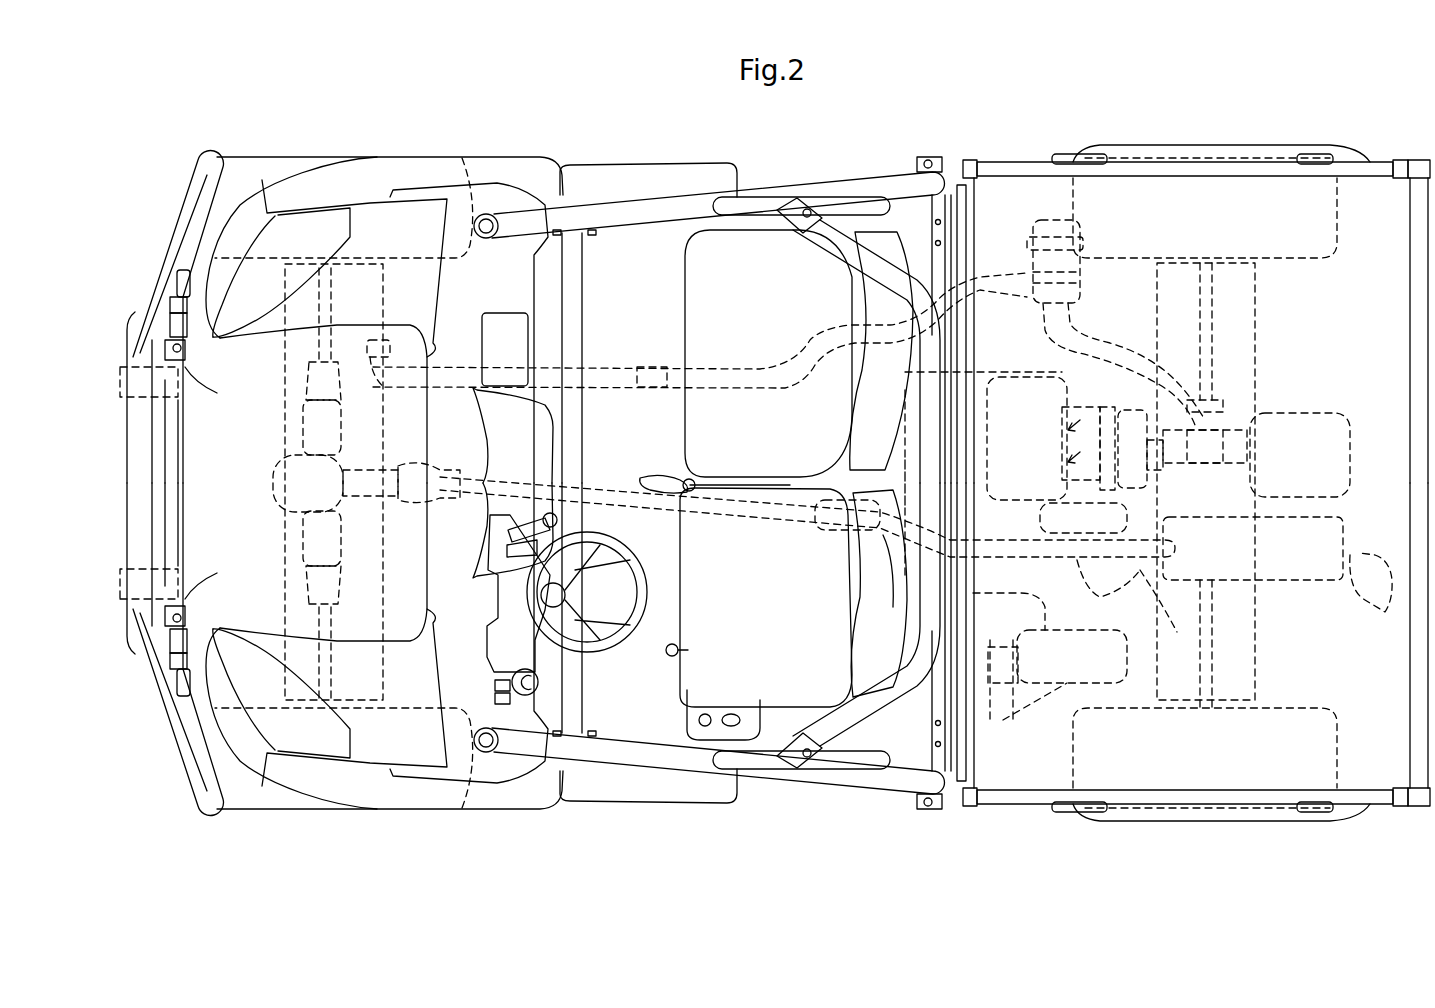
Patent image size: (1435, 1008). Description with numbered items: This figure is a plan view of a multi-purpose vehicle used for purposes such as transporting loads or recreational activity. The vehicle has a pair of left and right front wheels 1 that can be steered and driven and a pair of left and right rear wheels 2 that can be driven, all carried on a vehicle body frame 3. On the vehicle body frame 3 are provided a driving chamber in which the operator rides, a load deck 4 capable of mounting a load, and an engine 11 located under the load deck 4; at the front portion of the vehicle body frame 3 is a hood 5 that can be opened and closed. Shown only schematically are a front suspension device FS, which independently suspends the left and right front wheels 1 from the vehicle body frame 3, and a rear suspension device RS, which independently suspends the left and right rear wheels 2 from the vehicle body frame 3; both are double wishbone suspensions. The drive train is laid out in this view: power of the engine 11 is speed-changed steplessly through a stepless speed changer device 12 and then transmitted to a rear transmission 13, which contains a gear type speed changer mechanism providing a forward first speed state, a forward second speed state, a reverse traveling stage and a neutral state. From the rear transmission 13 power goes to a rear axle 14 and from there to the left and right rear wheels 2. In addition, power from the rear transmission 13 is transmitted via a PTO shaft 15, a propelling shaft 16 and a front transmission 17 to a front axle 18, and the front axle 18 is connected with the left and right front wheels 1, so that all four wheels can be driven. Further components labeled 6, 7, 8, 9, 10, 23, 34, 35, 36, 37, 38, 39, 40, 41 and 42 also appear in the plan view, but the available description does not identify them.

The front wheels 1 is at (262, 153).
The rear wheels 2 is at (1245, 150).
The vehicle body frame 3 is at (645, 245).
The load deck 4 is at (1370, 200).
The hood 5 is at (170, 353).
The passenger seat 6 is at (693, 663).
The driver seat 7 is at (687, 300).
The steering wheel 8 is at (642, 592).
The steering shaft 9 is at (573, 500).
The shift lever 10 is at (537, 660).
The engine 11 is at (1017, 373).
The stepless speed changer device 12 is at (1168, 618).
The rear transmission 13 is at (1338, 521).
The rear axle 14 is at (1266, 378).
The PTO shaft 15 is at (1343, 657).
The propelling shaft 16 is at (745, 505).
The front transmission 17 is at (273, 462).
The front axle 18 is at (303, 610).
The fuel tank 23 is at (1067, 557).
The intake duct 34 is at (1112, 432).
The muffler 35 is at (1017, 660).
The air cleaner 36 is at (1317, 455).
The air intake 37 is at (1376, 603).
The pipe 38 is at (767, 392).
The fuel tank 39 is at (1045, 220).
The air cleaner case 40 is at (1272, 400).
The intake duct 41 is at (1221, 427).
The rear drive shaft 42 is at (1205, 486).
The front suspension device FS is at (383, 293).
The rear suspension device RS is at (1260, 322).